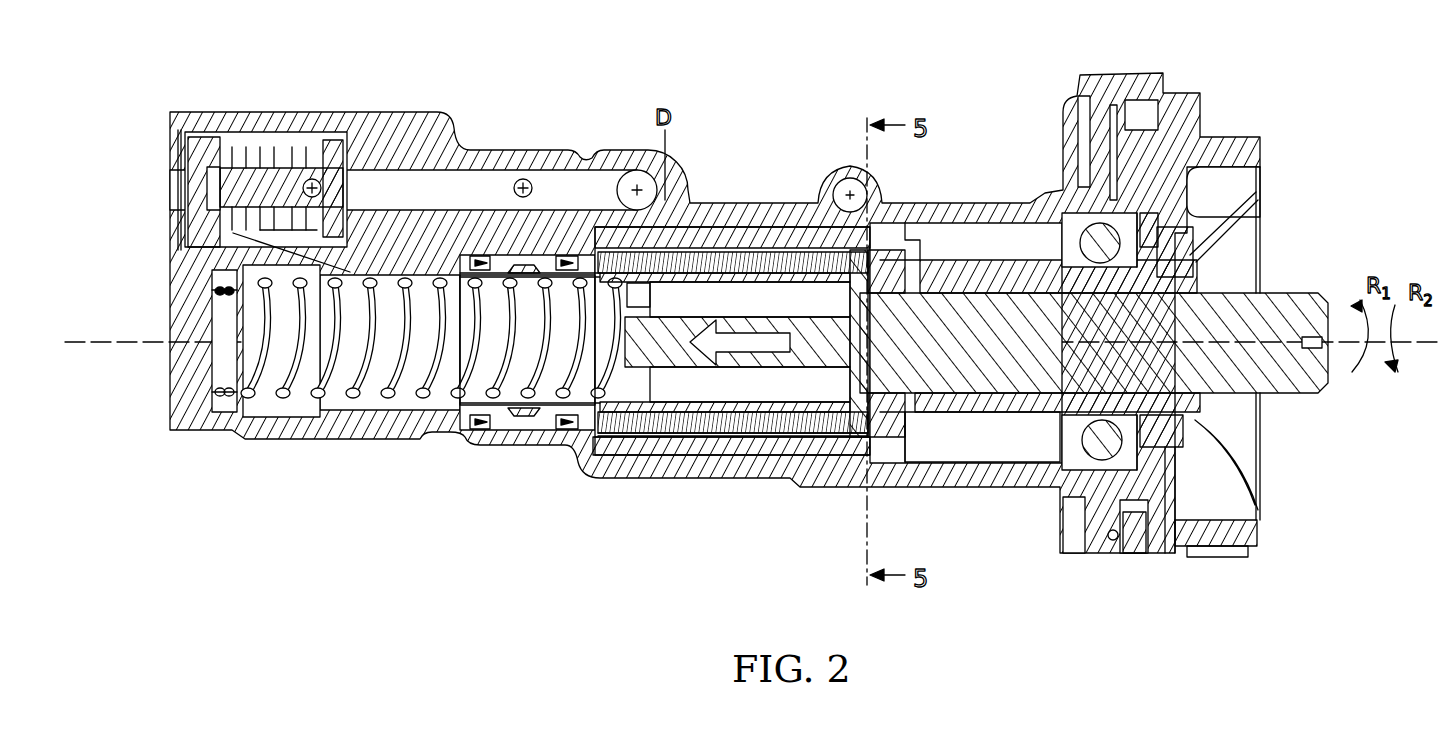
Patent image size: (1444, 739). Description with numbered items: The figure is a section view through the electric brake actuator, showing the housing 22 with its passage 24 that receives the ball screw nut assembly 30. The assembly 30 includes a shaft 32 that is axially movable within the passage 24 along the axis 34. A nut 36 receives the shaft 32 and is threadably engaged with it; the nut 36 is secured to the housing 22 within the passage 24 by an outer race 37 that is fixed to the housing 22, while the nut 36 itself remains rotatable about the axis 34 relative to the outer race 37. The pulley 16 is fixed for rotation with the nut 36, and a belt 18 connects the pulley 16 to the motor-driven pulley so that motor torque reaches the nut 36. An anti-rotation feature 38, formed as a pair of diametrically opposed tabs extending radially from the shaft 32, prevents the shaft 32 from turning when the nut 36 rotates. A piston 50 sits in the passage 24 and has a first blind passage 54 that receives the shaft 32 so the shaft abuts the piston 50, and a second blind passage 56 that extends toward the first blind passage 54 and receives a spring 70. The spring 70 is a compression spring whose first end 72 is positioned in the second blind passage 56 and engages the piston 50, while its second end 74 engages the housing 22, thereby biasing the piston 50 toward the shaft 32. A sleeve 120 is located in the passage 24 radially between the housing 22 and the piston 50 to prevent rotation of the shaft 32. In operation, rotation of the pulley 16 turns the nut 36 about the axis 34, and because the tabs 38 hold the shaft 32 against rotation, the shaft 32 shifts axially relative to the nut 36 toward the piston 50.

The pulley 16 is at (1252, 533).
The belt 18 is at (1221, 550).
The housing 22 is at (432, 128).
The passage 24 is at (992, 435).
The ball screw nut assembly 30 is at (1330, 272).
The shaft 32 is at (1310, 290).
The axis 34 is at (93, 350).
The nut 36 is at (965, 275).
The outer race 37 is at (1112, 214).
The anti-rotation feature 38 is at (852, 216).
The piston 50 is at (638, 420).
The first blind passage 54 is at (748, 299).
The second blind passage 56 is at (513, 373).
The spring 70 is at (290, 375).
The first end 72 is at (592, 300).
The second end 74 is at (215, 292).
The sleeve 120 is at (717, 448).